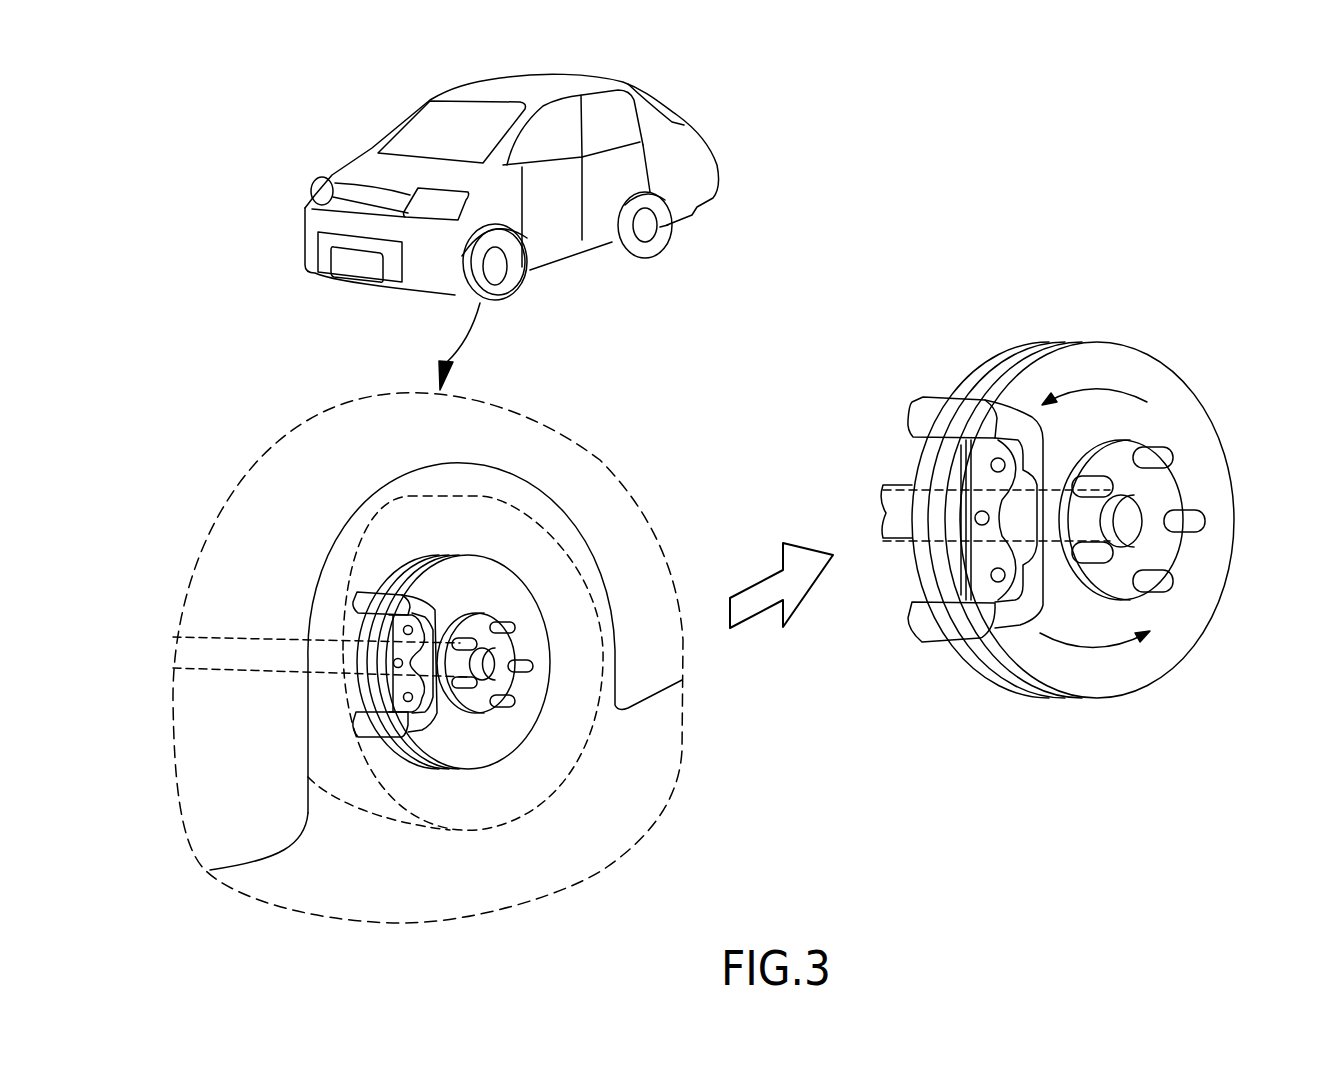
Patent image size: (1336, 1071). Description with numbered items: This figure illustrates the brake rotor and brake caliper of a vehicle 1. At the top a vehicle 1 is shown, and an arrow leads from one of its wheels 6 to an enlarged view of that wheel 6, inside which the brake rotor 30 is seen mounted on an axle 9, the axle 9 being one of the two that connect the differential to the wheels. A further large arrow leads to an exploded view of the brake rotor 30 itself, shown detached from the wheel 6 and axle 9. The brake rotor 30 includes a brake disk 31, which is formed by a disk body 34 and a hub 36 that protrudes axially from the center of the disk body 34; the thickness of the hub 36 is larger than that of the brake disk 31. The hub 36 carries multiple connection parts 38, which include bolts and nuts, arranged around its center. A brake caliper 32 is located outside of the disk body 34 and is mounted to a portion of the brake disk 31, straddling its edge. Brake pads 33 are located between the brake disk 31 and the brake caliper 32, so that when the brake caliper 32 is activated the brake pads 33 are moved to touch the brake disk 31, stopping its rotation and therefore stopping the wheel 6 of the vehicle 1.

The vehicle 1 is at (745, 125).
The wheel 6 is at (513, 283).
The axle 9 is at (260, 667).
The brake rotor 30 is at (530, 555).
The brake disk 31 is at (1170, 370).
The brake caliper 32 is at (1013, 420).
The brake pads 33 is at (966, 476).
The disk body 34 is at (1185, 412).
The hub 36 is at (1172, 495).
The connection parts 38 is at (1090, 488).